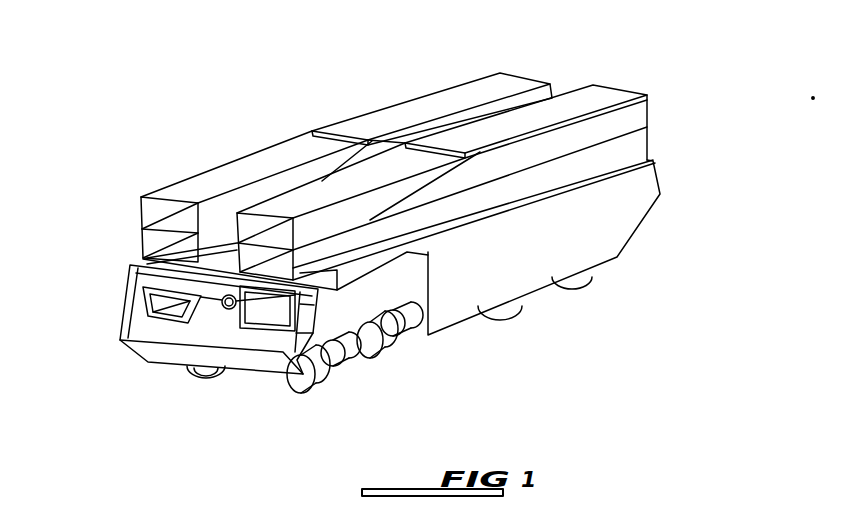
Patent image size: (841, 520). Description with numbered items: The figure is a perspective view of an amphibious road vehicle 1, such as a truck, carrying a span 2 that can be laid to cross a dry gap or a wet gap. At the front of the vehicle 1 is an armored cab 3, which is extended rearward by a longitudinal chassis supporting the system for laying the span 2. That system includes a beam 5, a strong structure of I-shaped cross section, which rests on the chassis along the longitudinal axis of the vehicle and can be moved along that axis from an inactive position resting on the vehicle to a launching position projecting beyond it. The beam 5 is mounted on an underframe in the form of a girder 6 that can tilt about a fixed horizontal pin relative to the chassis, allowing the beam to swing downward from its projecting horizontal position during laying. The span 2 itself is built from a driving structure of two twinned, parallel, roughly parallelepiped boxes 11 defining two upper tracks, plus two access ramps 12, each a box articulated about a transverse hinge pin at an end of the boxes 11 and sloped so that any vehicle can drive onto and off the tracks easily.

The road vehicle 1 is at (619, 258).
The span 2 is at (311, 127).
The armored cab 3 is at (258, 342).
The beam 5 is at (143, 292).
The girder 6 is at (198, 306).
The boxes 11 is at (617, 151).
The access ramps 12 is at (305, 200).